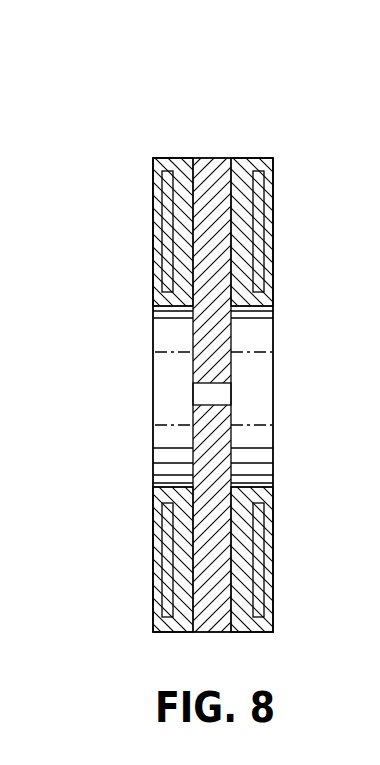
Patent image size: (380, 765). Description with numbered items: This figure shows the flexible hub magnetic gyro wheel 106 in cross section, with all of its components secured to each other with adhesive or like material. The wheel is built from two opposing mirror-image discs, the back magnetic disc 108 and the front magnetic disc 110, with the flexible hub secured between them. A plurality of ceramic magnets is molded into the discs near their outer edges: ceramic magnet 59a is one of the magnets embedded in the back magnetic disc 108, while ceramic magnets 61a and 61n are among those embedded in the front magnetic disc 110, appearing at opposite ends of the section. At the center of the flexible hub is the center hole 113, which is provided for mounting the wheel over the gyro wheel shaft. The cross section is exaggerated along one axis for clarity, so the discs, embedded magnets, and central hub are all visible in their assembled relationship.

The flexible hub magnetic gyro wheel 106 is at (104, 91).
The back magnetic disc 108 is at (160, 168).
The front magnetic disc 110 is at (263, 167).
The ceramic magnet 59a is at (166, 242).
The ceramic magnet 61a is at (257, 242).
The ceramic magnet 61n is at (258, 575).
The center hole 113 is at (207, 398).